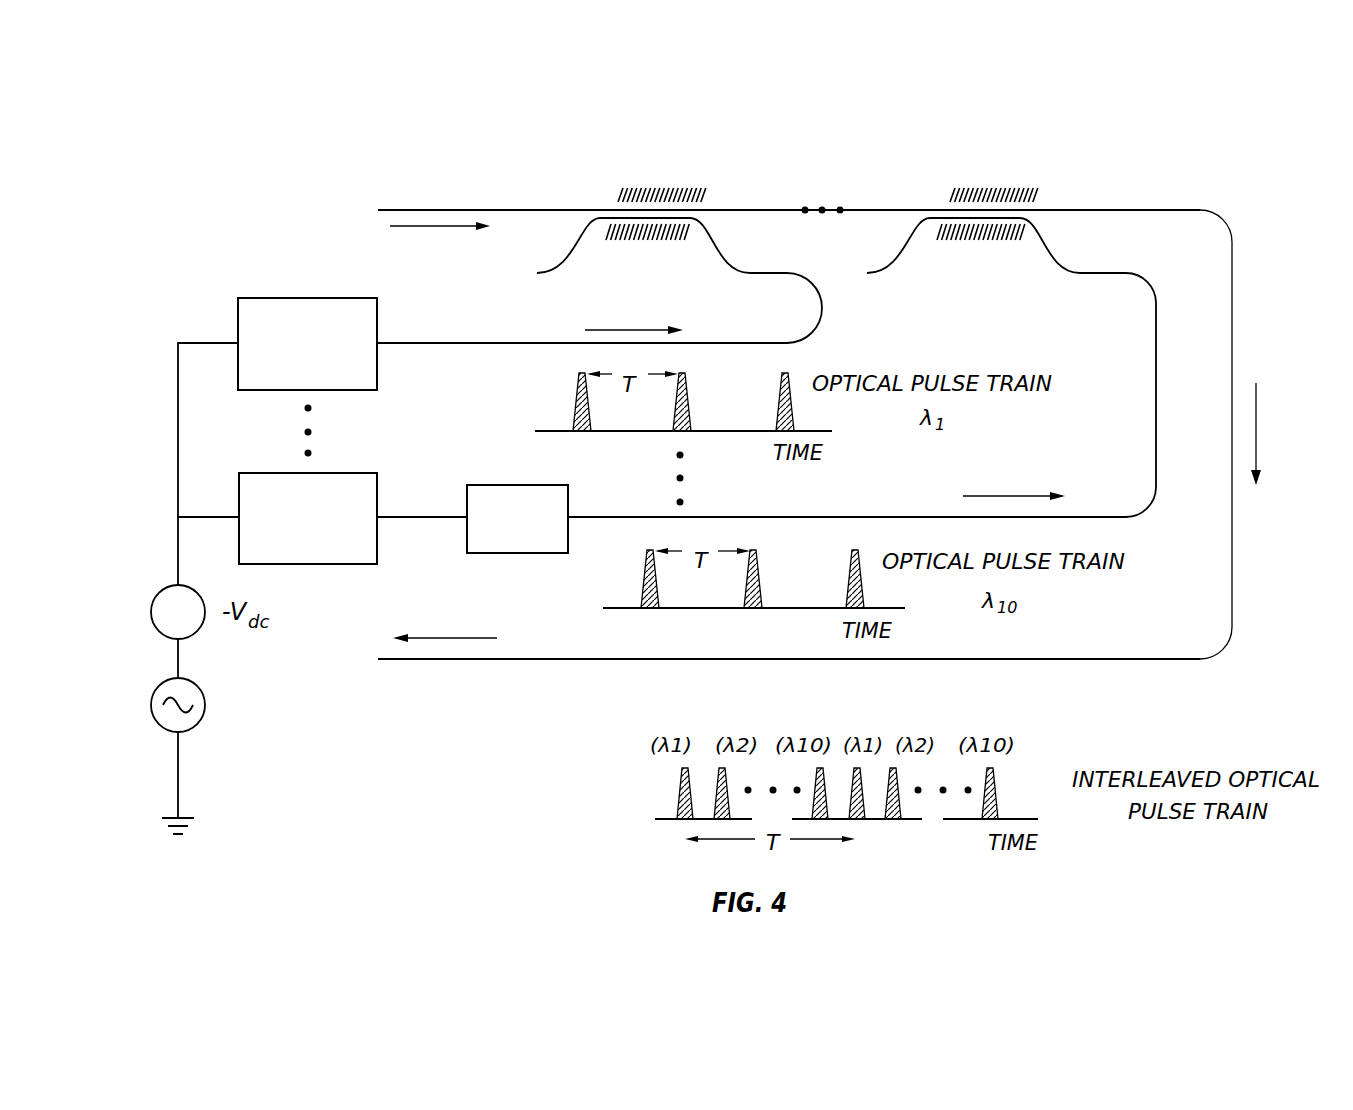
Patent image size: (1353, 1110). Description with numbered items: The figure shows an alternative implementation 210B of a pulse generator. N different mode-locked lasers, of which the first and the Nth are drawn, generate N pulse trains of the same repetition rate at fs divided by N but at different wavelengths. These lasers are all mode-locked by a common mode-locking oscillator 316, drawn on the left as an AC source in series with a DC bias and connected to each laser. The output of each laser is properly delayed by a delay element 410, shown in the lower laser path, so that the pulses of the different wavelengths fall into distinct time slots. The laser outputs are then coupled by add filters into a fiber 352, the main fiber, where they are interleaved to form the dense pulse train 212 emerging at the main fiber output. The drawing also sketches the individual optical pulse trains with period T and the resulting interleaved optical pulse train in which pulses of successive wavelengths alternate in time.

The pulse generator 210B is at (308, 137).
The fiber 352 is at (396, 210).
The delay element 410 is at (540, 485).
The dense pulse train 212 is at (636, 660).
The mode-locking oscillator 316 is at (152, 698).